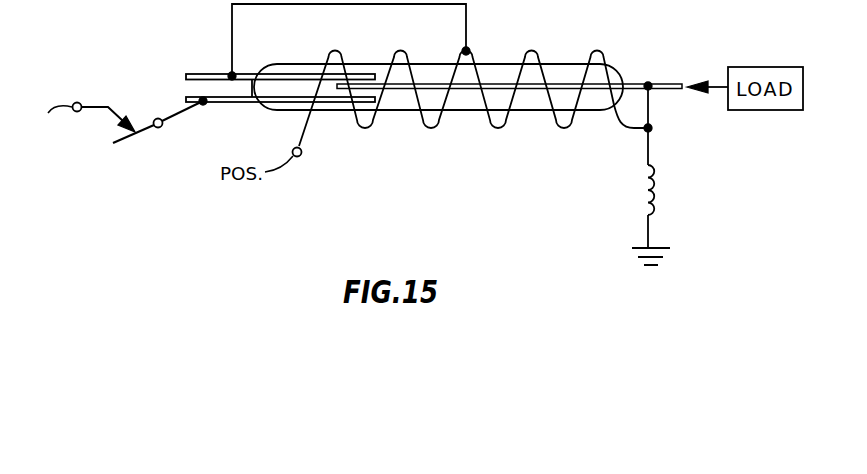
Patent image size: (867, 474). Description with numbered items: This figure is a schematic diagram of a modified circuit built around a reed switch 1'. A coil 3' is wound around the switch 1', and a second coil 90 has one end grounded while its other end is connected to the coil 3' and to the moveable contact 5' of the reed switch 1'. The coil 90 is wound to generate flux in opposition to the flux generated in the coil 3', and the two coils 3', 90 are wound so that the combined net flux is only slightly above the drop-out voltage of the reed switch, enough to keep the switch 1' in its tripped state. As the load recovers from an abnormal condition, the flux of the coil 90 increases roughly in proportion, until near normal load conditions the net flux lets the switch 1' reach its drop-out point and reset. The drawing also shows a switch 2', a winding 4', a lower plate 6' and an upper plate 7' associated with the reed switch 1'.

The reed switch 1' is at (437, 108).
The switch 2' is at (116, 102).
The coil 3' is at (473, 111).
The helical coil winding 4' is at (473, 111).
The moveable contact 5' is at (509, 60).
The lower plate electrode 6' is at (280, 116).
The upper plate electrode 7' is at (280, 61).
The coil 90 is at (656, 167).